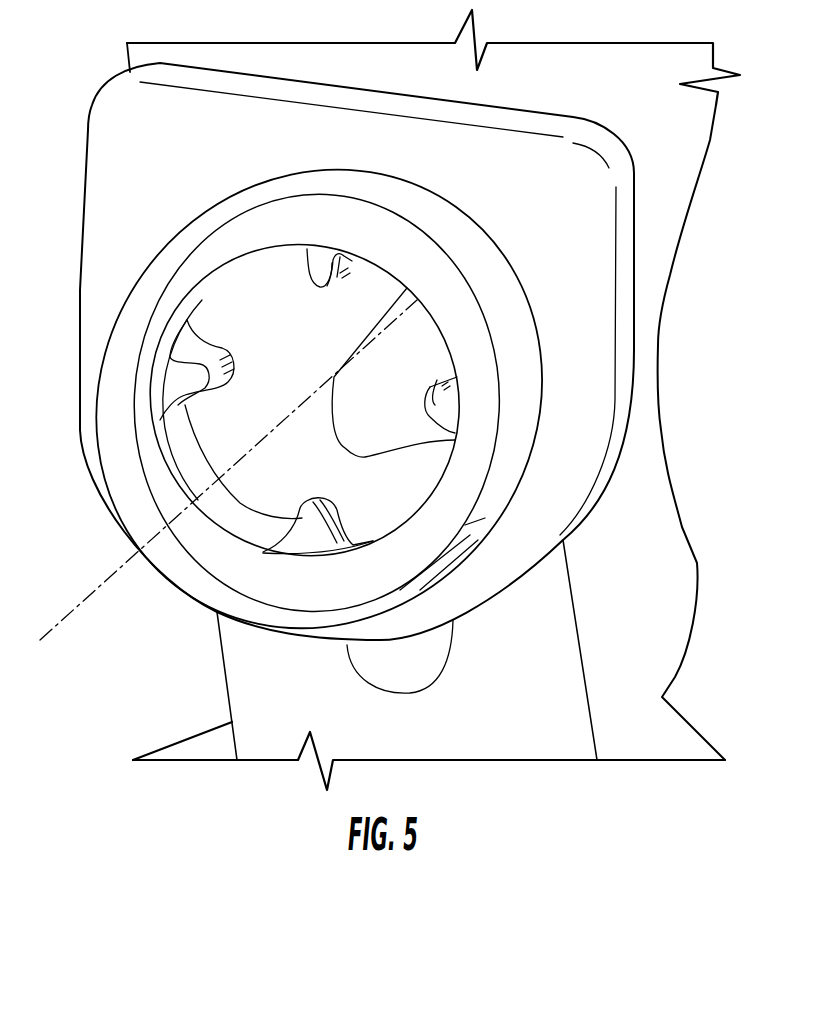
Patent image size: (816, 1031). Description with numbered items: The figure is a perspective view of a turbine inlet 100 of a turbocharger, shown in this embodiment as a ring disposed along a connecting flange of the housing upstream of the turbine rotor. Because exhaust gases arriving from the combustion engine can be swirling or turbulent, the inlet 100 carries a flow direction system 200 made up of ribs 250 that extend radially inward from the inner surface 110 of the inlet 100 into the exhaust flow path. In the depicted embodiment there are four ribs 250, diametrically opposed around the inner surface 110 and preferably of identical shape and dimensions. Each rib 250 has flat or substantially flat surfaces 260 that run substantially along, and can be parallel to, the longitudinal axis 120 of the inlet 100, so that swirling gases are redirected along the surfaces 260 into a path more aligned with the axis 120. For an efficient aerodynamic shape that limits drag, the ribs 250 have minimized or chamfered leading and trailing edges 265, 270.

The inlet 100 is at (178, 260).
The inner surface 110 is at (197, 468).
The longitudinal axis 120 is at (260, 441).
The flow direction system 200 is at (353, 550).
The ribs 250 is at (317, 537).
The surfaces 260 is at (193, 354).
The leading edge 265 is at (272, 514).
The trailing edge 270 is at (340, 512).